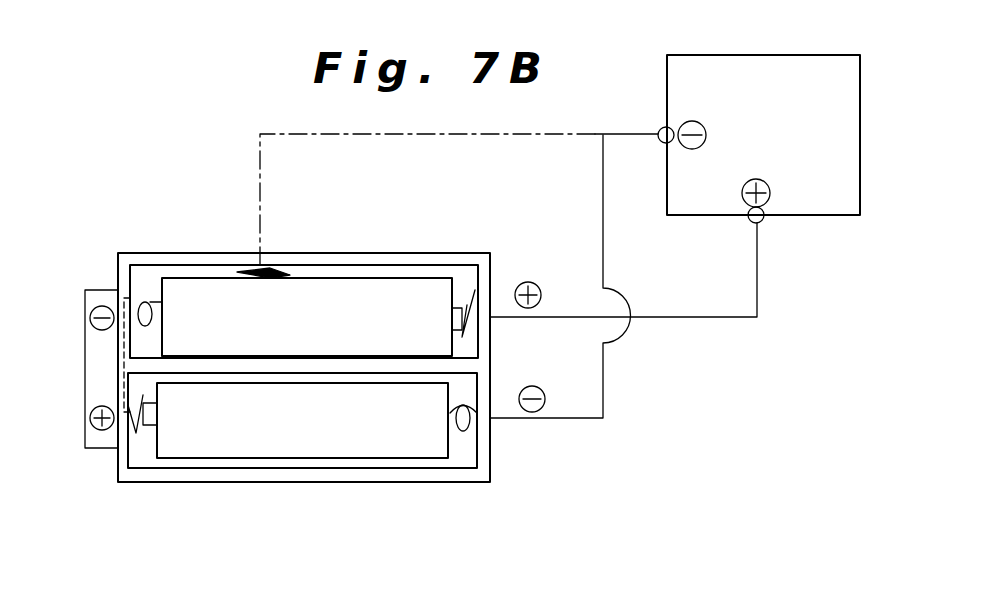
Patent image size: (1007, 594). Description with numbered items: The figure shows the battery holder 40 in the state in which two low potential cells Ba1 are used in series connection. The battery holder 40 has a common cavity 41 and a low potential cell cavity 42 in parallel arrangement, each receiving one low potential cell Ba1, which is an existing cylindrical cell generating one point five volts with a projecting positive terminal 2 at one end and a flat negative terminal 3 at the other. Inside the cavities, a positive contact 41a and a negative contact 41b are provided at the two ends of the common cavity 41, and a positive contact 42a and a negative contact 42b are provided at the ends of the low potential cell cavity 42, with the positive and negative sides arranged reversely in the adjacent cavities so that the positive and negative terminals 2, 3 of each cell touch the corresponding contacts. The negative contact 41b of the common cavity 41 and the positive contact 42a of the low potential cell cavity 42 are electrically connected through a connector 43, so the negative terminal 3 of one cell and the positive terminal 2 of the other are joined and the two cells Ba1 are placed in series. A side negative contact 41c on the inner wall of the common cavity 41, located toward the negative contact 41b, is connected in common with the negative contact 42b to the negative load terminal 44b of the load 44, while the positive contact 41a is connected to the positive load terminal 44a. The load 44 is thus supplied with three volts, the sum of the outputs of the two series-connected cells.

The battery holder 40 is at (160, 246).
The common cavity 41 is at (390, 276).
The positive contact 41a is at (470, 290).
The negative contact 41b is at (162, 316).
The side negative contact 41c is at (272, 268).
The low potential cell cavity 42 is at (302, 468).
The positive contact 42a is at (135, 440).
The negative contact 42b is at (465, 440).
The connector 43 is at (122, 372).
The load 44 is at (755, 83).
The positive load terminal 44a is at (762, 222).
The negative load terminal 44b is at (659, 130).
The low potential cell Ba1 is at (357, 268).
The positive terminal 2 is at (452, 318).
The negative terminal 3 is at (162, 332).